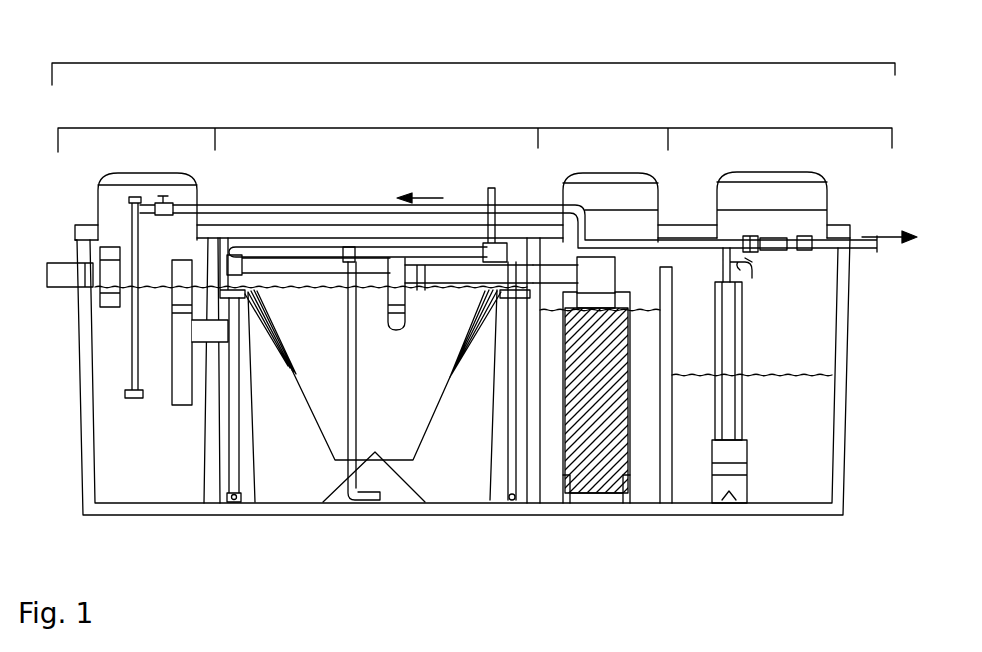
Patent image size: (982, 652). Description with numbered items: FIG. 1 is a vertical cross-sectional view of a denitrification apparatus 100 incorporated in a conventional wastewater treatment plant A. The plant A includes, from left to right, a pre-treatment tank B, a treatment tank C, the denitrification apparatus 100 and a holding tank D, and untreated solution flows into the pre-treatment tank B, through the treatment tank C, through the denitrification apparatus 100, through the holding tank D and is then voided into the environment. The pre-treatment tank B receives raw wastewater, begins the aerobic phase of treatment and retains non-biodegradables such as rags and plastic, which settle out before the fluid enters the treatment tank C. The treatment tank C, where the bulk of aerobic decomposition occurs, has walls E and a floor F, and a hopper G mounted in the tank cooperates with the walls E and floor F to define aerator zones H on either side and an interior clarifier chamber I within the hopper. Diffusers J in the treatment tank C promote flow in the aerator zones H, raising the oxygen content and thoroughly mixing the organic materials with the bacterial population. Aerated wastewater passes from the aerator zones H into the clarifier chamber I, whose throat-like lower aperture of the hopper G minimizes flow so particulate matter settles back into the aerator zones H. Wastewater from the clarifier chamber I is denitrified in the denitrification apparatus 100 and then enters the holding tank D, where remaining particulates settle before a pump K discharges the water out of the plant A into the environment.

The wastewater treatment plant A is at (500, 63).
The pre-treatment tank B is at (139, 128).
The treatment tank C is at (389, 128).
The holding tank D is at (774, 128).
The walls E is at (258, 440).
The floor F is at (284, 500).
The hopper G is at (437, 410).
The aerator zones H is at (290, 413).
The clarifier chamber I is at (410, 389).
The diffusers J is at (500, 491).
The pump K is at (750, 464).
The denitrification apparatus 100 is at (605, 128).